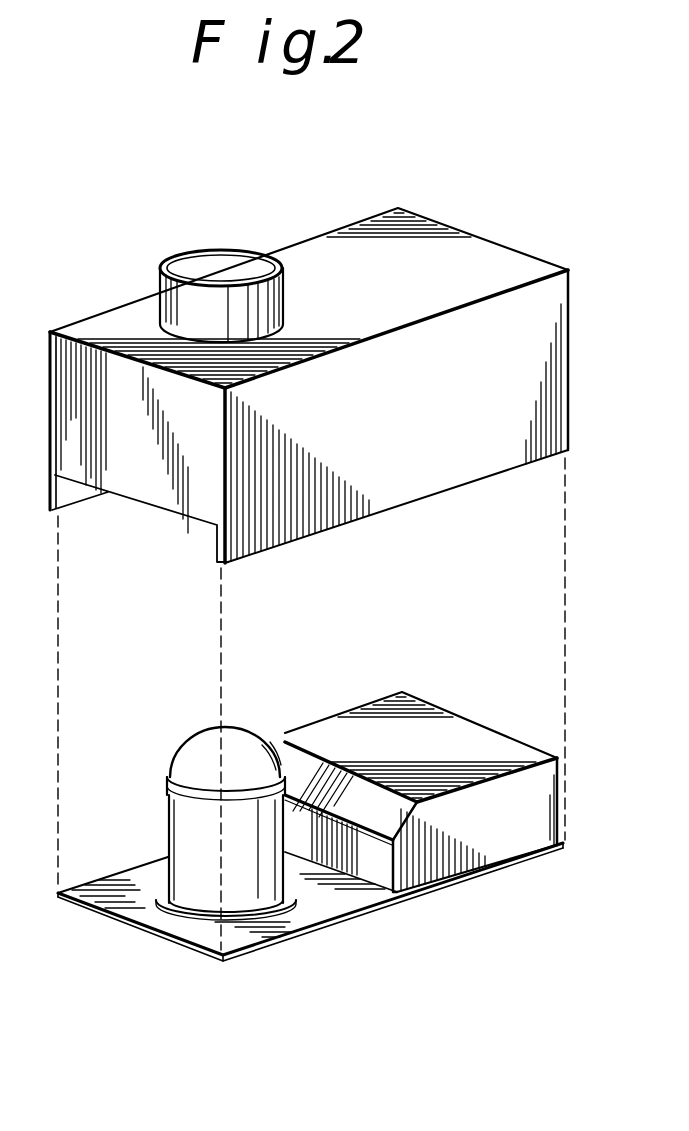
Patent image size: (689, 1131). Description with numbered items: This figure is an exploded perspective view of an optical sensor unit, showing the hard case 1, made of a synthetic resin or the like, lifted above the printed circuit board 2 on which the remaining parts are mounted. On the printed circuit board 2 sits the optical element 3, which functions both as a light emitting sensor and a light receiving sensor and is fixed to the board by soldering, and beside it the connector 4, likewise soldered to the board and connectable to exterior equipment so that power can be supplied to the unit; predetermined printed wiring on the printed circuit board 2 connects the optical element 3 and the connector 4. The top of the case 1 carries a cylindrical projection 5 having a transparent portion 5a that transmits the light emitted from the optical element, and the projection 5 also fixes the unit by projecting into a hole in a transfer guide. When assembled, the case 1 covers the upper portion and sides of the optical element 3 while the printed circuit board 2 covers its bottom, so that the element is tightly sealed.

The case 1 is at (486, 260).
The printed circuit board 2 is at (150, 912).
The optical element 3 is at (181, 818).
The connector 4 is at (516, 798).
The projection 5 is at (184, 300).
The transparent portion 5a is at (211, 265).